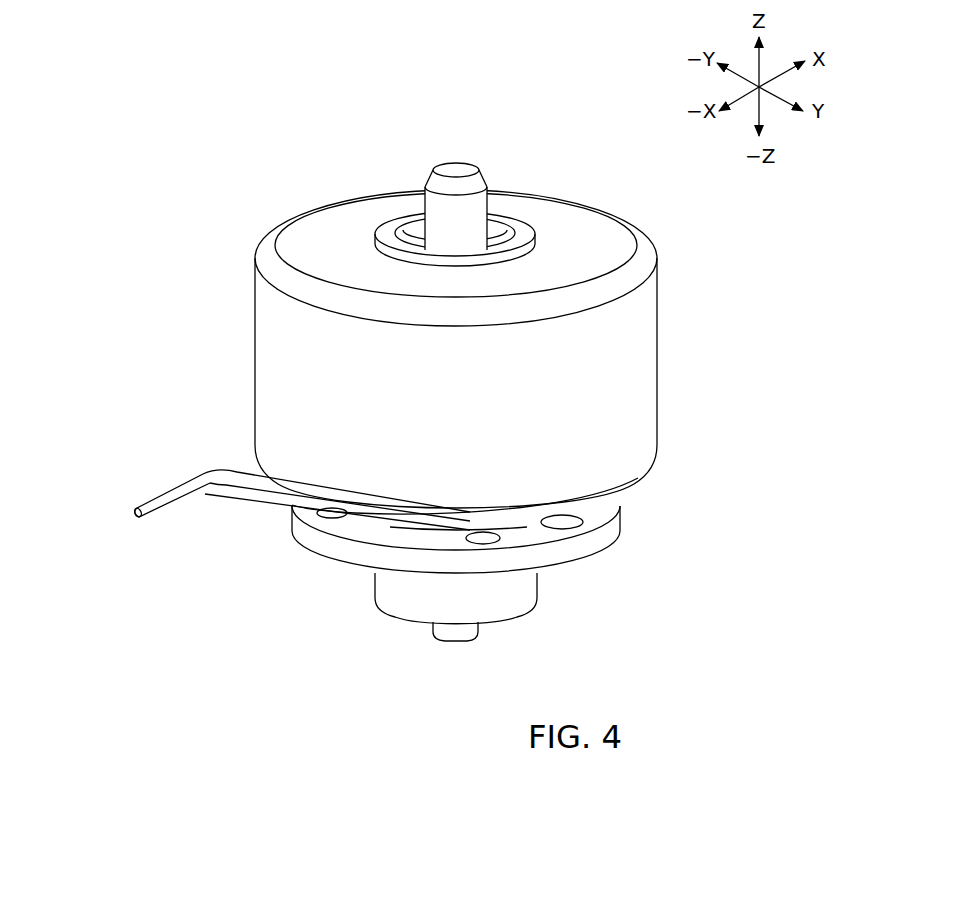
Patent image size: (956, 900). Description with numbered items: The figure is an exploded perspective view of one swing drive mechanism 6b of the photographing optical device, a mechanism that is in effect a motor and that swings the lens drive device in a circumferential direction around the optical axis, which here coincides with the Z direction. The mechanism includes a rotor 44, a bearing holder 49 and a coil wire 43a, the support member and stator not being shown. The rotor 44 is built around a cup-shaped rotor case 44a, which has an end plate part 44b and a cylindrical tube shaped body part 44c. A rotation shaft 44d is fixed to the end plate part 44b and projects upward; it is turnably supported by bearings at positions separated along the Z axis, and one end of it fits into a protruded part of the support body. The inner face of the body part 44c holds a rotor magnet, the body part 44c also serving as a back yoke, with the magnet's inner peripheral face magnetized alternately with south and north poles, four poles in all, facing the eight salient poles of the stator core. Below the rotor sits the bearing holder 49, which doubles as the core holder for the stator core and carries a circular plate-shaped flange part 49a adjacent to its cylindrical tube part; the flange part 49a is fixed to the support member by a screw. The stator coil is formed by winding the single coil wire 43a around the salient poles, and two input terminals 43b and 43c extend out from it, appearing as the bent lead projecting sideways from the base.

The swing drive mechanism 6b is at (138, 123).
The rotor 44 is at (250, 230).
The rotor case 44a is at (270, 340).
The end plate part 44b is at (605, 245).
The body part 44c is at (270, 405).
The rotation shaft 44d is at (473, 205).
The coil wire 43a is at (260, 517).
The input terminal 43b is at (158, 494).
The input terminal 43c is at (262, 502).
The bearing holder 49 is at (342, 570).
The flange part 49a is at (605, 533).